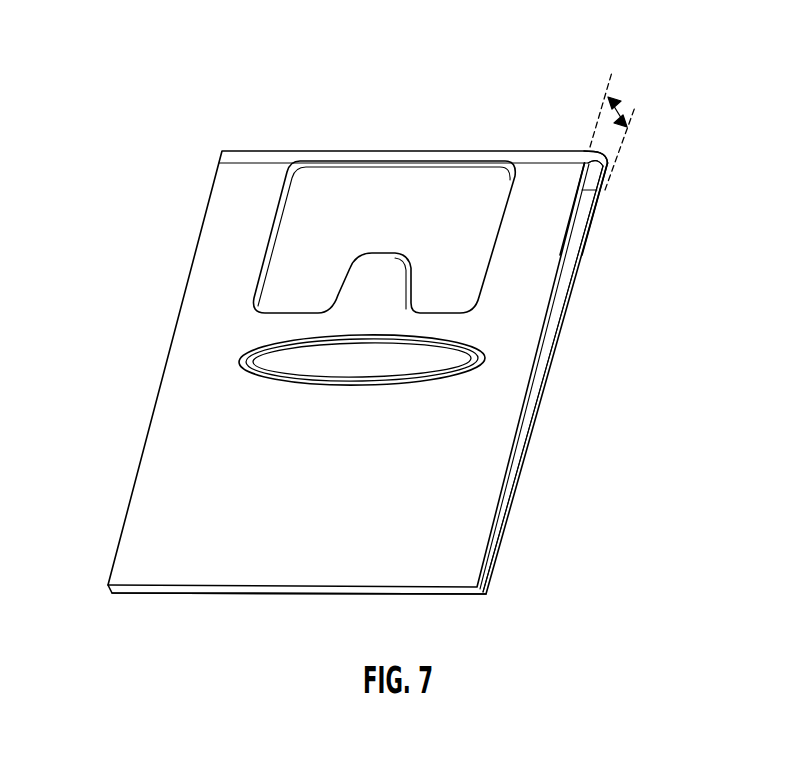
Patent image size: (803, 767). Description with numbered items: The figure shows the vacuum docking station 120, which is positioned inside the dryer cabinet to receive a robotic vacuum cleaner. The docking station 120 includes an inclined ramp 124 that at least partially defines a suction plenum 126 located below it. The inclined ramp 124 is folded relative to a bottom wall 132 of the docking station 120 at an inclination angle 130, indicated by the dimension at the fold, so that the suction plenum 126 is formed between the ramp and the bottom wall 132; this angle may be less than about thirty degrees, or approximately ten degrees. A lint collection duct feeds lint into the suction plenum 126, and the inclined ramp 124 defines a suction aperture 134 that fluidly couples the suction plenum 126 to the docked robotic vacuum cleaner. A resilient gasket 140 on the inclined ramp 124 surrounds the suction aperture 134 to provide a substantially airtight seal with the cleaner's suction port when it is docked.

The vacuum docking station 120 is at (106, 291).
The inclined ramp 124 is at (475, 521).
The suction plenum 126 is at (353, 189).
The inclination angle 130 is at (622, 118).
The bottom wall 132 is at (588, 273).
The suction aperture 134 is at (337, 357).
The resilient gasket 140 is at (415, 384).